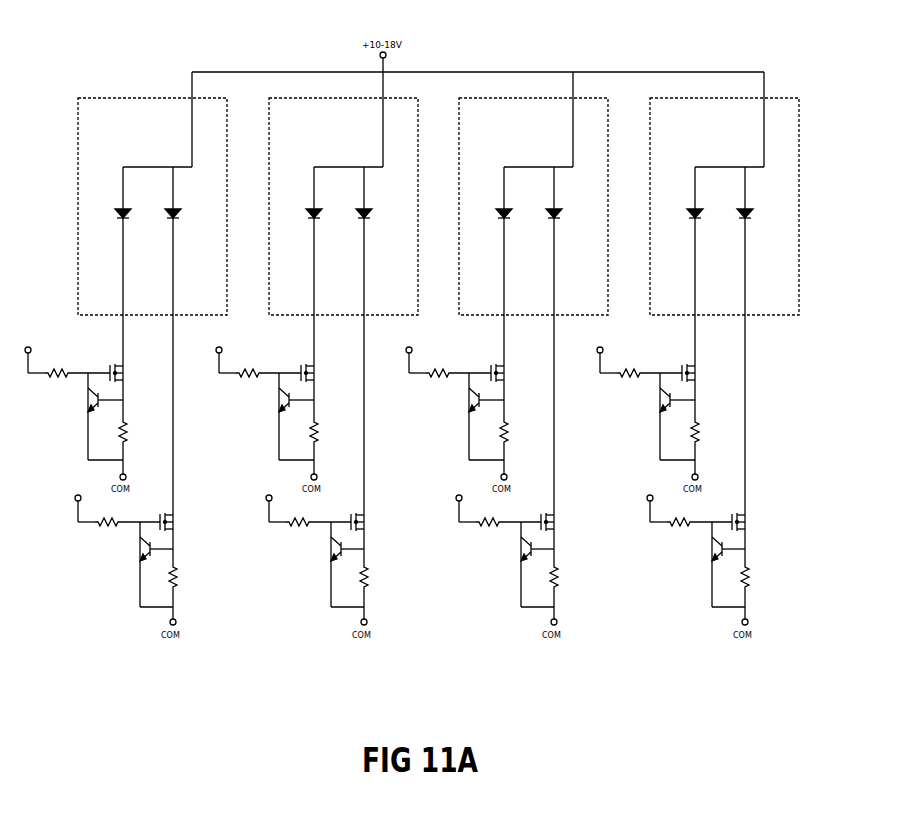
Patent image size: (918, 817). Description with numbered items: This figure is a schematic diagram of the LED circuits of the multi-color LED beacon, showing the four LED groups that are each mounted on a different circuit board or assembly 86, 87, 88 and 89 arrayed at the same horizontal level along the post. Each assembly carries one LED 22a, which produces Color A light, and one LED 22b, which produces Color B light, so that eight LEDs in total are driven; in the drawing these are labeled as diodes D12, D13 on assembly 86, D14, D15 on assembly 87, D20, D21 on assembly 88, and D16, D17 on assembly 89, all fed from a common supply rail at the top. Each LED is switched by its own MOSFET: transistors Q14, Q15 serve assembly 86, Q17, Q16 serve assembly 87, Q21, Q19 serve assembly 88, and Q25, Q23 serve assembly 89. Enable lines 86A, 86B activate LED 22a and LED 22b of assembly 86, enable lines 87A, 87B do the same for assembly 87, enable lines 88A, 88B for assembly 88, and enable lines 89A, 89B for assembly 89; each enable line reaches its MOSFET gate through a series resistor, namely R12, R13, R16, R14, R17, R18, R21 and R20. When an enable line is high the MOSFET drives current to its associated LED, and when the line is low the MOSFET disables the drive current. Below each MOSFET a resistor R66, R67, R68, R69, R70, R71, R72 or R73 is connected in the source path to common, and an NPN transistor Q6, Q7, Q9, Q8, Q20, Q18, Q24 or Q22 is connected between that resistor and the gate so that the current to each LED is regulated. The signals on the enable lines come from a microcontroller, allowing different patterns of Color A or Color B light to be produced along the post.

The LED 22a is at (87, 220).
The LED 22b is at (209, 242).
The circuit board or assembly 86 is at (94, 317).
The enable line 86A is at (24, 344).
The enable line 86B is at (84, 492).
The circuit board or assembly 87 is at (334, 218).
The enable line 87A is at (215, 344).
The enable line 87B is at (275, 492).
The circuit board or assembly 88 is at (524, 218).
The enable line 88A is at (405, 344).
The enable line 88B is at (465, 492).
The circuit board or assembly 89 is at (715, 218).
The enable line 89A is at (596, 344).
The enable line 89B is at (656, 492).
The LED D12 is at (119, 216).
The LED D13 is at (181, 208).
The LED D14 is at (278, 220).
The LED D15 is at (400, 242).
The LED D20 is at (468, 220).
The LED D21 is at (590, 242).
The LED D16 is at (659, 220).
The LED D17 is at (781, 242).
The gate resistor R12 is at (58, 369).
The gate resistor R13 is at (108, 517).
The gate resistor R16 is at (249, 369).
The gate resistor R14 is at (299, 517).
The gate resistor R17 is at (439, 369).
The gate resistor R18 is at (489, 517).
The gate resistor R21 is at (630, 369).
The gate resistor R20 is at (680, 517).
The sense resistor R66 is at (132, 432).
The sense resistor R67 is at (184, 577).
The sense resistor R68 is at (323, 432).
The sense resistor R69 is at (375, 577).
The sense resistor R70 is at (513, 432).
The sense resistor R71 is at (565, 577).
The sense resistor R72 is at (704, 432).
The sense resistor R73 is at (756, 577).
The MOSFET Q14 is at (137, 375).
The MOSFET Q15 is at (188, 524).
The MOSFET Q17 is at (328, 375).
The MOSFET Q16 is at (379, 524).
The MOSFET Q21 is at (518, 375).
The MOSFET Q19 is at (569, 524).
The MOSFET Q25 is at (709, 375).
The MOSFET Q23 is at (760, 524).
The NPN transistor Q6 is at (75, 404).
The NPN transistor Q7 is at (127, 553).
The NPN transistor Q9 is at (266, 404).
The NPN transistor Q8 is at (318, 553).
The NPN transistor Q20 is at (456, 404).
The NPN transistor Q18 is at (508, 553).
The NPN transistor Q24 is at (647, 404).
The NPN transistor Q22 is at (699, 553).